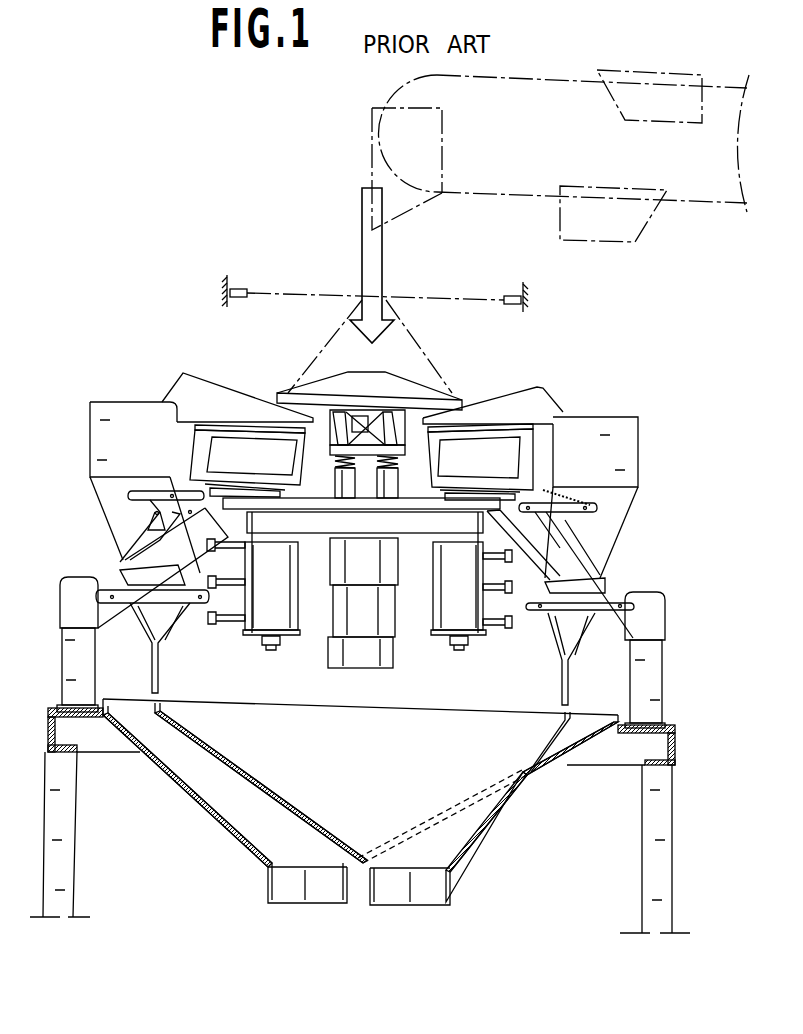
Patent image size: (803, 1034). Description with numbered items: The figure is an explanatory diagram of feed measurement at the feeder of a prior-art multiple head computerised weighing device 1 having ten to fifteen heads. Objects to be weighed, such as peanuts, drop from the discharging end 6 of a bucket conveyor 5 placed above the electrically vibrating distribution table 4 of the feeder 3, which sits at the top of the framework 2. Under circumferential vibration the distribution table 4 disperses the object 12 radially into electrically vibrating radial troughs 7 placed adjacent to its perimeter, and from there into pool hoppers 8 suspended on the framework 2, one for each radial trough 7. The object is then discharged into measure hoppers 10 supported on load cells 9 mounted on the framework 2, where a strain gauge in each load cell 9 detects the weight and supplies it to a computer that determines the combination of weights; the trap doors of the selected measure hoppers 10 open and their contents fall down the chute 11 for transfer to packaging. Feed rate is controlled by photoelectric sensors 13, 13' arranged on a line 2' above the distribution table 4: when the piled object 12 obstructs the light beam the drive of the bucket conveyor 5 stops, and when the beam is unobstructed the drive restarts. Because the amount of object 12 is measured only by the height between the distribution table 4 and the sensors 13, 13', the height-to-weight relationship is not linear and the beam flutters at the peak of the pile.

The multiple head computerised weighing device 1 is at (72, 557).
The framework 2 is at (365, 596).
The conveyor path line 2' is at (339, 293).
The feeder 3 is at (453, 390).
The distribution table 4 is at (432, 366).
The bucket conveyor 5 is at (693, 183).
The discharging end 6 is at (372, 162).
The radial trough 7 is at (206, 378).
The pool hopper 8 is at (113, 497).
The load cell 9 is at (662, 660).
The measure hopper 10 is at (563, 641).
The chute 11 is at (475, 813).
The object 12 is at (312, 358).
The photoelectric sensor 13 is at (247, 279).
The photoelectric sensor 13' is at (502, 284).